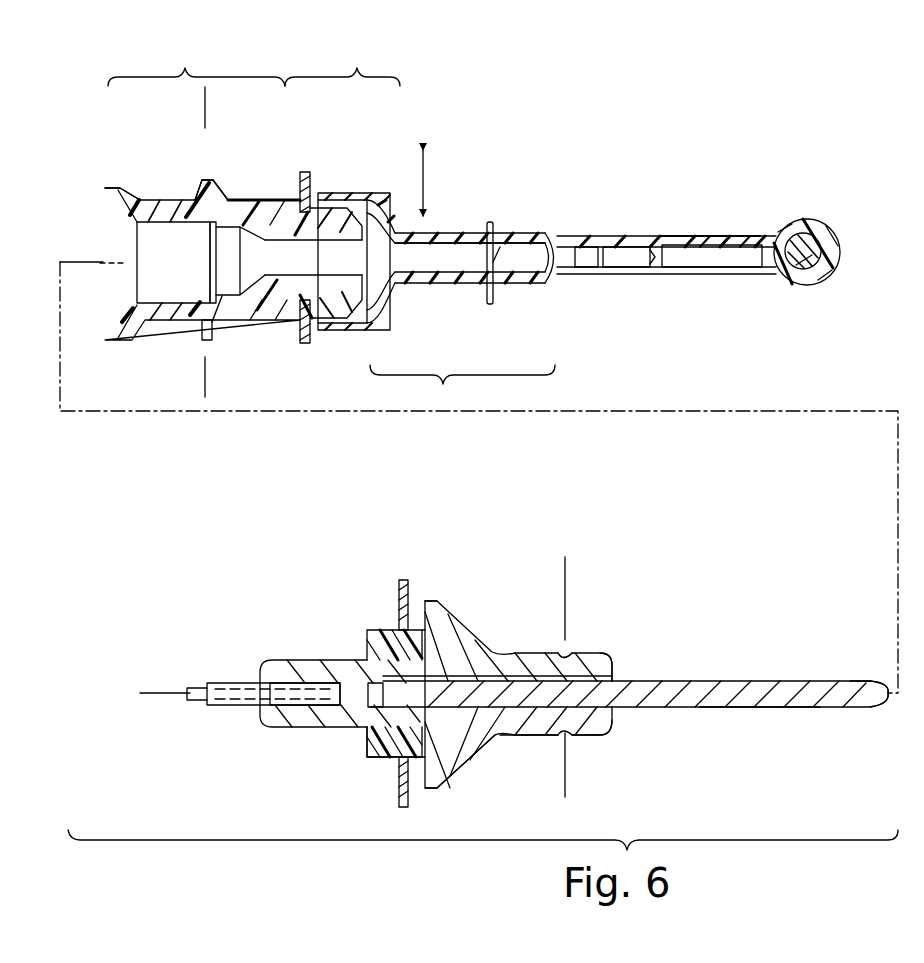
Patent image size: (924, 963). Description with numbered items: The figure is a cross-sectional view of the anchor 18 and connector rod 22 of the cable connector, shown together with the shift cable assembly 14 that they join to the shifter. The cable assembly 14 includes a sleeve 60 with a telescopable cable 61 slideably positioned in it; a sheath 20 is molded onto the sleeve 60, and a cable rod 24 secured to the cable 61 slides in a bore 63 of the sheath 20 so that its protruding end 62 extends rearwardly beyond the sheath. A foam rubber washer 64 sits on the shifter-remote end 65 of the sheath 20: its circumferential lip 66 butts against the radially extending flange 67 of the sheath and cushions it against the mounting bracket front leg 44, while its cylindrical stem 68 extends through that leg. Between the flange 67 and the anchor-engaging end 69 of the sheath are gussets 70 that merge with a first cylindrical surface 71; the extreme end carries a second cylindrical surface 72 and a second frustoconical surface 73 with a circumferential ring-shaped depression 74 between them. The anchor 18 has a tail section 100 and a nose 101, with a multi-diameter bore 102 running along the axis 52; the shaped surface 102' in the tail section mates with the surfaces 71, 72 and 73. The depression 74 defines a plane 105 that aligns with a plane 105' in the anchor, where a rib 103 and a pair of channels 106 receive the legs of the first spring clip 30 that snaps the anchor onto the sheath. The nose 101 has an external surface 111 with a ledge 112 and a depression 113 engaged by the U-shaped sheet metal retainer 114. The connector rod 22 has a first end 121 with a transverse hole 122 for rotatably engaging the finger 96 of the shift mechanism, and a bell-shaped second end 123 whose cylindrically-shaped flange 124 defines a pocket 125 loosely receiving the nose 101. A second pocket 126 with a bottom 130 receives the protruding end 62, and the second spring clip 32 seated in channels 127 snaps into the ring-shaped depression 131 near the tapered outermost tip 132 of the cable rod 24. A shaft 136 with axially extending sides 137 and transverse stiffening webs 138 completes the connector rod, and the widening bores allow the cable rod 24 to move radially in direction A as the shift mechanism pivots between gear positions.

The shift cable assembly 14 is at (278, 652).
The anchor 18 is at (115, 180).
The sheath 20 is at (430, 594).
The connector rod 22 is at (624, 233).
The cable rod 24 is at (437, 233).
The first spring clip 30 is at (205, 182).
The second spring clip 32 is at (491, 222).
The mounting bracket front leg 44 is at (398, 590).
The axis 52 is at (90, 263).
The sleeve 60 is at (232, 705).
The telescopable cable 61 is at (198, 703).
The protruding end 62 is at (760, 707).
The bore 63 is at (187, 217).
The foam rubber washer 64 is at (356, 625).
The shifter-remote end 65 is at (335, 683).
The circumferential lip 66 is at (420, 620).
The radially extending flange 67 is at (440, 600).
The cylindrical stem 68 is at (378, 758).
The anchor-engaging end 69 is at (612, 681).
The gussets 70 is at (452, 760).
The first cylindrical surface 71 is at (520, 735).
The second cylindrical surface 72 is at (590, 735).
The second frustoconical surface 73 is at (612, 720).
The circumferential ring-shaped depression 74 is at (570, 653).
The finger 96 is at (805, 268).
The tail section 100 is at (196, 62).
The nose 101 is at (342, 62).
The multi-diameter bore 102 is at (156, 241).
The shaped surface 102' is at (173, 262).
The rib 103 is at (195, 200).
The plane 105 is at (589, 658).
The plane 105' is at (239, 381).
The channels 106 is at (220, 200).
The external surface 111 is at (282, 200).
The ledge 112 is at (303, 172).
The depression 113 is at (304, 326).
The U-shaped sheet metal retainer 114 is at (312, 186).
The first end 121 is at (812, 216).
The transverse hole 122 is at (828, 248).
The second end 123 is at (462, 388).
The cylindrically-shaped flange 124 is at (395, 322).
The pocket 125 is at (372, 312).
The second pocket 126 is at (466, 245).
The channels 127 is at (500, 247).
The bottom 130 is at (528, 262).
The ring-shaped depression 131 is at (843, 681).
The outermost tip 132 is at (880, 706).
The shaft 136 is at (670, 236).
The axially extending sides 137 is at (695, 267).
The transverse stiffening webs 138 is at (652, 262).
The direction A is at (428, 185).